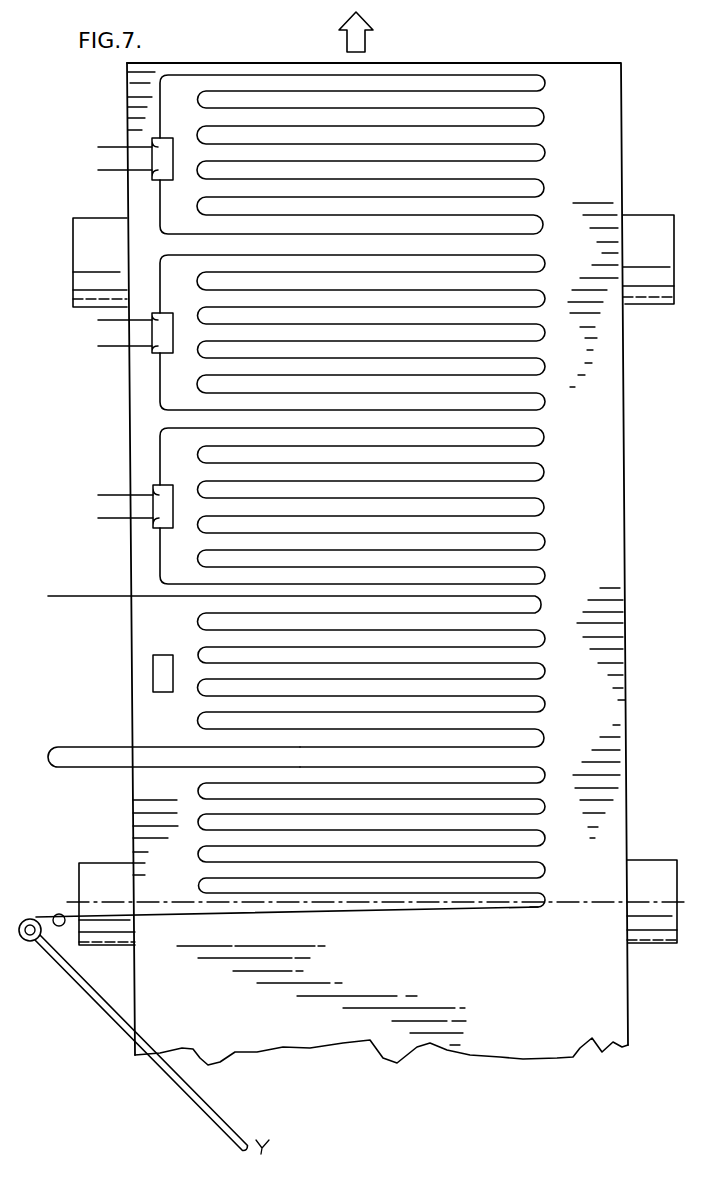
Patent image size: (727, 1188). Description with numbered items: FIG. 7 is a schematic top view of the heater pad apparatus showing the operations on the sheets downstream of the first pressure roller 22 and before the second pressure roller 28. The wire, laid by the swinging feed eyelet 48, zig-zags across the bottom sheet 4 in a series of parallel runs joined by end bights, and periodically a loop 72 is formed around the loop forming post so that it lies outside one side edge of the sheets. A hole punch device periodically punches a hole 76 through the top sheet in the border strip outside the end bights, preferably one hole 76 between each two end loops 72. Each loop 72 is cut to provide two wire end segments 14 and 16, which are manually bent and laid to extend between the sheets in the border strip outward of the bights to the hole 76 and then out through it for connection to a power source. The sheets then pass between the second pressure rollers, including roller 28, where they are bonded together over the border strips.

The bottom sheet 4 is at (596, 500).
The wire end segment 14 is at (110, 495).
The wire end segment 16 is at (110, 522).
The first pressure roller 22 is at (92, 868).
The second pressure roller 28 is at (84, 232).
The feed eyelet 48 is at (29, 942).
The loop 72 is at (70, 747).
The hole 76 is at (153, 687).